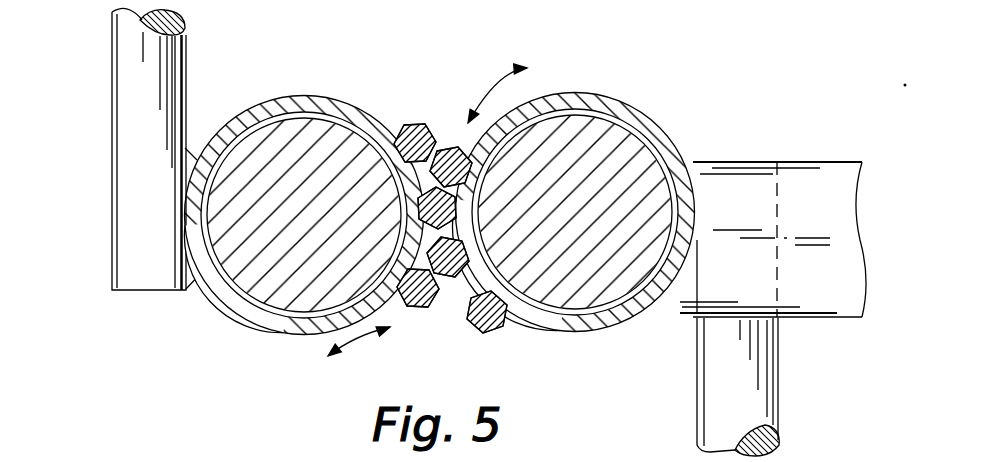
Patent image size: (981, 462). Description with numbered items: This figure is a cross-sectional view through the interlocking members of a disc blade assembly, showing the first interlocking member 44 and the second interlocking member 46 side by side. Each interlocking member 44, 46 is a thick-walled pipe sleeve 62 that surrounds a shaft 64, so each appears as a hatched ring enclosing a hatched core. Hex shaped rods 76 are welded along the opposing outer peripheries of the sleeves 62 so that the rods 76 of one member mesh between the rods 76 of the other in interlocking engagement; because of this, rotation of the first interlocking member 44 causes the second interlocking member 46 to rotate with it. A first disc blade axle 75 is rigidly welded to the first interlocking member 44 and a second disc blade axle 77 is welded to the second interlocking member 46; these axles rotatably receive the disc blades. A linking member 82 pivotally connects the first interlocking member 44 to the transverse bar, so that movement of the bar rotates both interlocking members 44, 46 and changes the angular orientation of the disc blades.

The first interlocking member 44 is at (638, 100).
The second interlocking member 46 is at (345, 90).
The pipe sleeve 62 is at (300, 96).
The shaft 64 is at (283, 318).
The first disc blade axle 75 is at (760, 402).
The hex shaped rod 76 is at (452, 148).
The second disc blade axle 77 is at (122, 178).
The linking member 82 is at (803, 175).